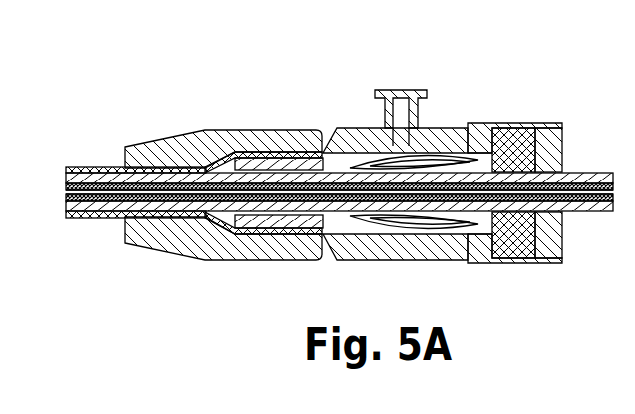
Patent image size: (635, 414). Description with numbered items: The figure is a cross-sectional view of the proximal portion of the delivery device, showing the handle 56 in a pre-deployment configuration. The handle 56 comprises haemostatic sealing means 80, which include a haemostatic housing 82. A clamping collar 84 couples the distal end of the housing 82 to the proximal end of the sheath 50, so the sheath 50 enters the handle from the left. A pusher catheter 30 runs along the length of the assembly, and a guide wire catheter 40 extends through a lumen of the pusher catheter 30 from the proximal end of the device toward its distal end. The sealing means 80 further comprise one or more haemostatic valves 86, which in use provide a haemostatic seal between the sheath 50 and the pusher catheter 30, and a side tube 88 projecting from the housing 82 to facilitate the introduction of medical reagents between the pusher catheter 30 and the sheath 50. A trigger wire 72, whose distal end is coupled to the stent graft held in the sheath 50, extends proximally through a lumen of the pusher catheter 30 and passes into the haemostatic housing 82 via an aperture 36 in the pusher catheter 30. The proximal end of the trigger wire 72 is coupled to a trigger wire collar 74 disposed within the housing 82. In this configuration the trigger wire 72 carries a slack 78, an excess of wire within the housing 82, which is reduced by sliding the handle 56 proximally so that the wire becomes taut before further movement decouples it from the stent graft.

The pusher catheter 30 is at (94, 223).
The aperture 36 is at (335, 163).
The guide wire catheter 40 is at (128, 220).
The sheath 50 is at (103, 168).
The handle 56 is at (369, 176).
The trigger wire 72 is at (430, 229).
The trigger wire collar 74 is at (503, 259).
The slack 78 is at (375, 229).
The haemostatic sealing means 80 is at (455, 110).
The haemostatic housing 82 is at (362, 141).
The clamping collar 84 is at (165, 157).
The haemostatic valve 86 is at (529, 259).
The side tube 88 is at (385, 92).